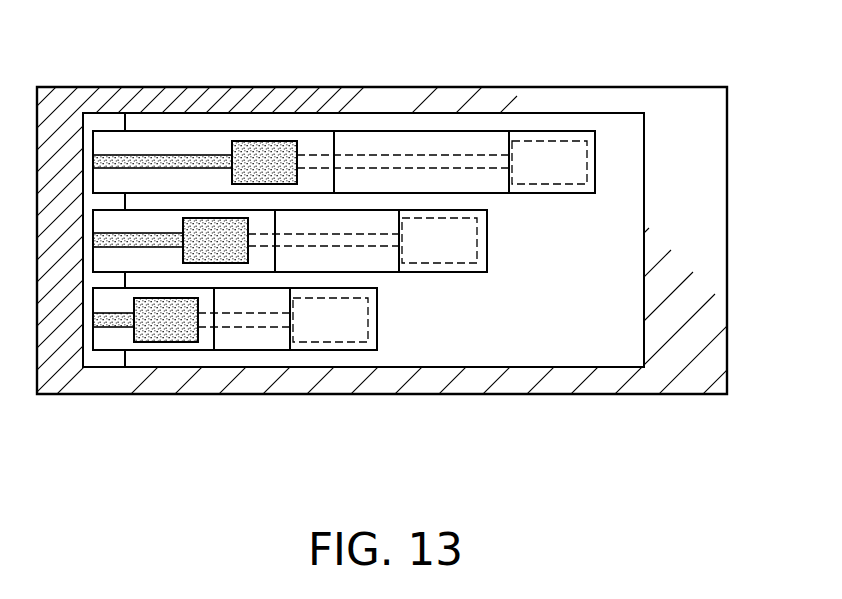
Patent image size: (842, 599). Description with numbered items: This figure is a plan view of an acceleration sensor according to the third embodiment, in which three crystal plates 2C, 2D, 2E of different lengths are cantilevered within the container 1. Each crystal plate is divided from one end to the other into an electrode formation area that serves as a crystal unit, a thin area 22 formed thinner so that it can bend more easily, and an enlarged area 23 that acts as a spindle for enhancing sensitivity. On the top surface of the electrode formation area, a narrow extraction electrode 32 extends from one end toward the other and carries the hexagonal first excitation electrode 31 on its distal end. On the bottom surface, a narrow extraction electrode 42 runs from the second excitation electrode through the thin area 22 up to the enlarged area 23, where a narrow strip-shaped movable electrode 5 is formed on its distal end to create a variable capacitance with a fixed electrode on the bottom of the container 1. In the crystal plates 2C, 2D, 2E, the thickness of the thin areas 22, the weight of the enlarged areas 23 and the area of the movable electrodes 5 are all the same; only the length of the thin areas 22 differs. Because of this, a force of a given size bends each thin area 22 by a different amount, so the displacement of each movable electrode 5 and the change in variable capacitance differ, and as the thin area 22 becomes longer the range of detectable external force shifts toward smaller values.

The container 1 is at (643, 87).
The thin area 22 is at (361, 133).
The enlarged area 23 is at (556, 133).
The movable electrode 5 is at (526, 141).
The first excitation electrode 31 is at (270, 143).
The extraction electrode 32 is at (183, 158).
The extraction electrode 42 is at (318, 158).
The crystal plate 2C is at (617, 171).
The crystal plate 2D is at (510, 241).
The crystal plate 2E is at (395, 322).